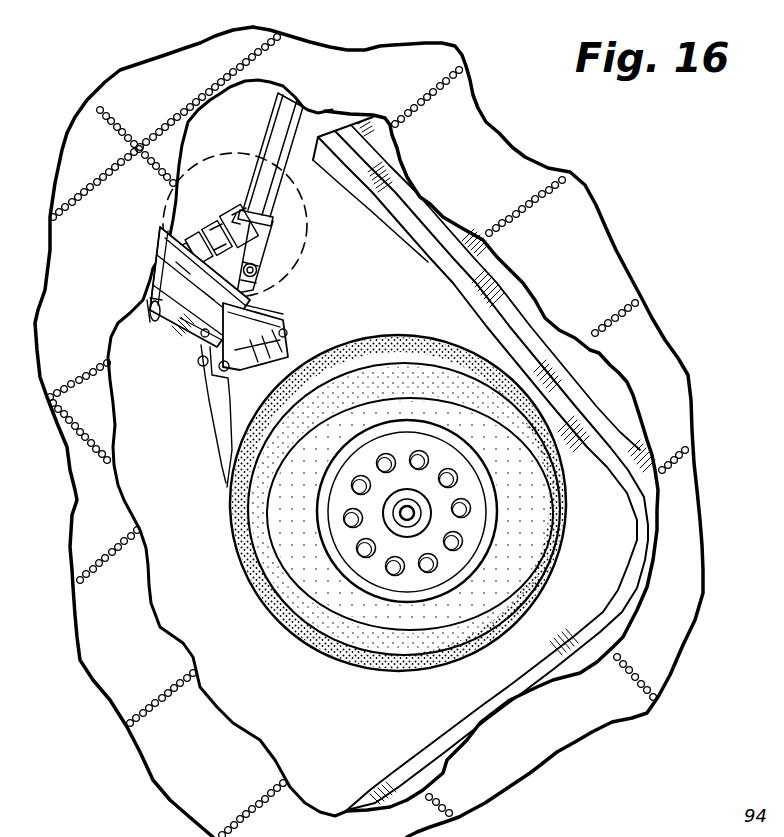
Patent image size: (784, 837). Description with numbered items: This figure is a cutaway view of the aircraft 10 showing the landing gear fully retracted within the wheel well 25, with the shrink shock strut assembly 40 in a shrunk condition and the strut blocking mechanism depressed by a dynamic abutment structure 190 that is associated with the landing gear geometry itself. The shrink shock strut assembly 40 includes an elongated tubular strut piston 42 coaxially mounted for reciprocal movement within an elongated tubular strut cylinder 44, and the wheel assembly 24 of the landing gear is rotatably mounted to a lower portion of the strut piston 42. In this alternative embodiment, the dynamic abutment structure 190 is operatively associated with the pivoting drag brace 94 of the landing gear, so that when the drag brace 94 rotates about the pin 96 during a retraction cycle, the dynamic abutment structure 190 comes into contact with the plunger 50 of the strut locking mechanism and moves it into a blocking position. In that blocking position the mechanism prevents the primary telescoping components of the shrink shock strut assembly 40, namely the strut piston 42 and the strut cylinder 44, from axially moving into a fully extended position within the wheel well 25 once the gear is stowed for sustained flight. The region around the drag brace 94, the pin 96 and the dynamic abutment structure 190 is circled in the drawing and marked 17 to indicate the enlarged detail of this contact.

The aircraft 10 is at (600, 246).
The detail view indicator 17 is at (305, 255).
The wheel assembly 24 is at (240, 567).
The wheel well 25 is at (600, 470).
The shrink shock strut assembly 40 is at (172, 352).
The strut piston 42 is at (293, 362).
The strut cylinder 44 is at (155, 268).
The plunger 50 is at (212, 215).
The drag brace 94 is at (318, 112).
The pin 96 is at (245, 280).
The dynamic abutment structure 190 is at (237, 213).